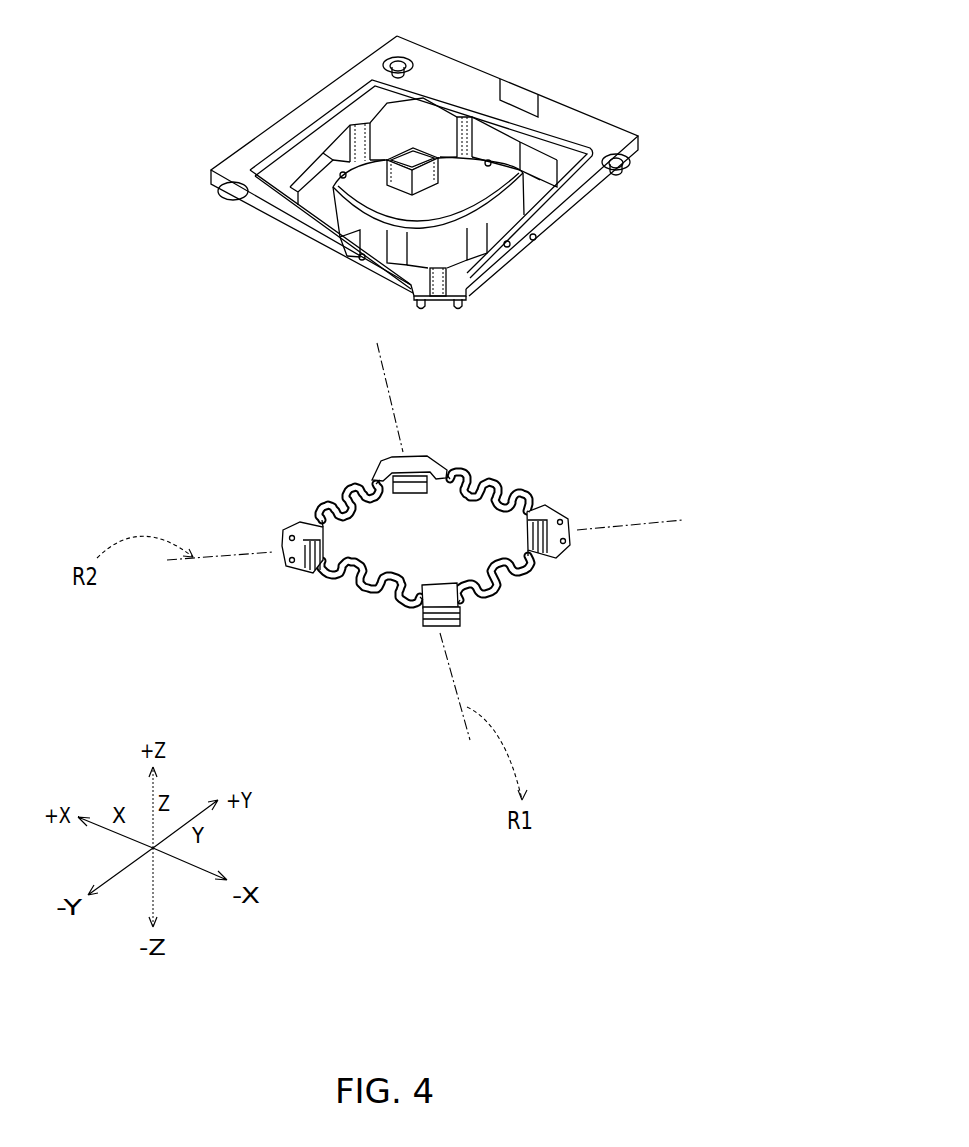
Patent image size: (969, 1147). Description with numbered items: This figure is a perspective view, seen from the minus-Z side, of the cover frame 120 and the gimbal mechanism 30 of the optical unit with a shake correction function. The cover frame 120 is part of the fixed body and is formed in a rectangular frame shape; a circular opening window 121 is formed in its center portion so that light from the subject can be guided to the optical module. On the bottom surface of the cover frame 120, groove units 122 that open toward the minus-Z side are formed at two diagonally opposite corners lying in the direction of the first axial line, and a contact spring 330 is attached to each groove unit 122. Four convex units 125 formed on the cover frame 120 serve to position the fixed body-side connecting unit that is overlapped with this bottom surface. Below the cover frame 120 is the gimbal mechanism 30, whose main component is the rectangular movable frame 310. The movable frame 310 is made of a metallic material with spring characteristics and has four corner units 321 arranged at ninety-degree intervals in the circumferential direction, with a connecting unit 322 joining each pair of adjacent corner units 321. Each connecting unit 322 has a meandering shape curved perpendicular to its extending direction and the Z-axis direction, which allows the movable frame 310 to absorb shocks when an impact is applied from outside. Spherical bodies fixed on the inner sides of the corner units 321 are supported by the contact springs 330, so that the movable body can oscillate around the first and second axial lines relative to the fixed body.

The cover frame 120 is at (442, 182).
The opening window 121 is at (460, 208).
The groove unit 122 is at (400, 118).
The convex unit 125 is at (293, 233).
The gimbal mechanism 30 is at (413, 562).
The movable frame 310 is at (427, 562).
The corner unit 321 is at (380, 462).
The connecting unit 322 is at (323, 502).
The contact spring 330 is at (373, 475).